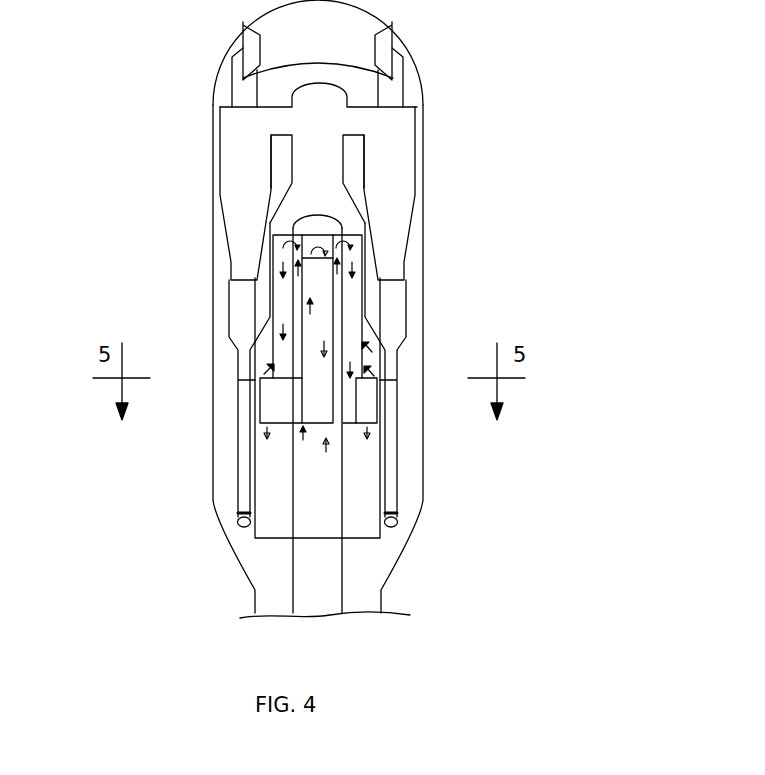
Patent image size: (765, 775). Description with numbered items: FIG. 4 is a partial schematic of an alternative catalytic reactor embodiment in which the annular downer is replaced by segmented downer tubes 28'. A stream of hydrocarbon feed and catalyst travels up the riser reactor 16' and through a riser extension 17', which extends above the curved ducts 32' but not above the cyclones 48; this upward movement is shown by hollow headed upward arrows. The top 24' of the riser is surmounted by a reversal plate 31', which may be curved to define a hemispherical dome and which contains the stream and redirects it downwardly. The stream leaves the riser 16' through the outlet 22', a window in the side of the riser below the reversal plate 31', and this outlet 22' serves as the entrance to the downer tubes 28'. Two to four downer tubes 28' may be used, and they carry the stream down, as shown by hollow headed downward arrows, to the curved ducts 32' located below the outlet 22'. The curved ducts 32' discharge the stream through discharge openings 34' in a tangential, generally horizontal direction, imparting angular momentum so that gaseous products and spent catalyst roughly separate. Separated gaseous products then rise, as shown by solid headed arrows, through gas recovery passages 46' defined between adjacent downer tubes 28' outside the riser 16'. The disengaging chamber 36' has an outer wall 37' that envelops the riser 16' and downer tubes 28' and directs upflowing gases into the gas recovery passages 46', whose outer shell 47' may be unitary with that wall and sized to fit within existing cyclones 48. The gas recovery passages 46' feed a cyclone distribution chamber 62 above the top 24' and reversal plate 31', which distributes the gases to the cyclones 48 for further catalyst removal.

The riser reactor 16' is at (328, 309).
The riser extension 17' is at (248, 420).
The outlet 22' is at (320, 194).
The top of the riser 24' is at (251, 262).
The downer tubes 28' is at (324, 380).
The reversal plate 31' is at (390, 172).
The curved ducts 32' is at (331, 444).
The discharge openings 34' is at (417, 428).
The disengaging chamber 36' is at (361, 398).
The outer wall 37' is at (278, 494).
The gas recovery passages 46' is at (319, 306).
The outer shell 47' is at (424, 377).
The cyclones 48 is at (257, 187).
The cyclone distribution chamber 62 is at (333, 113).